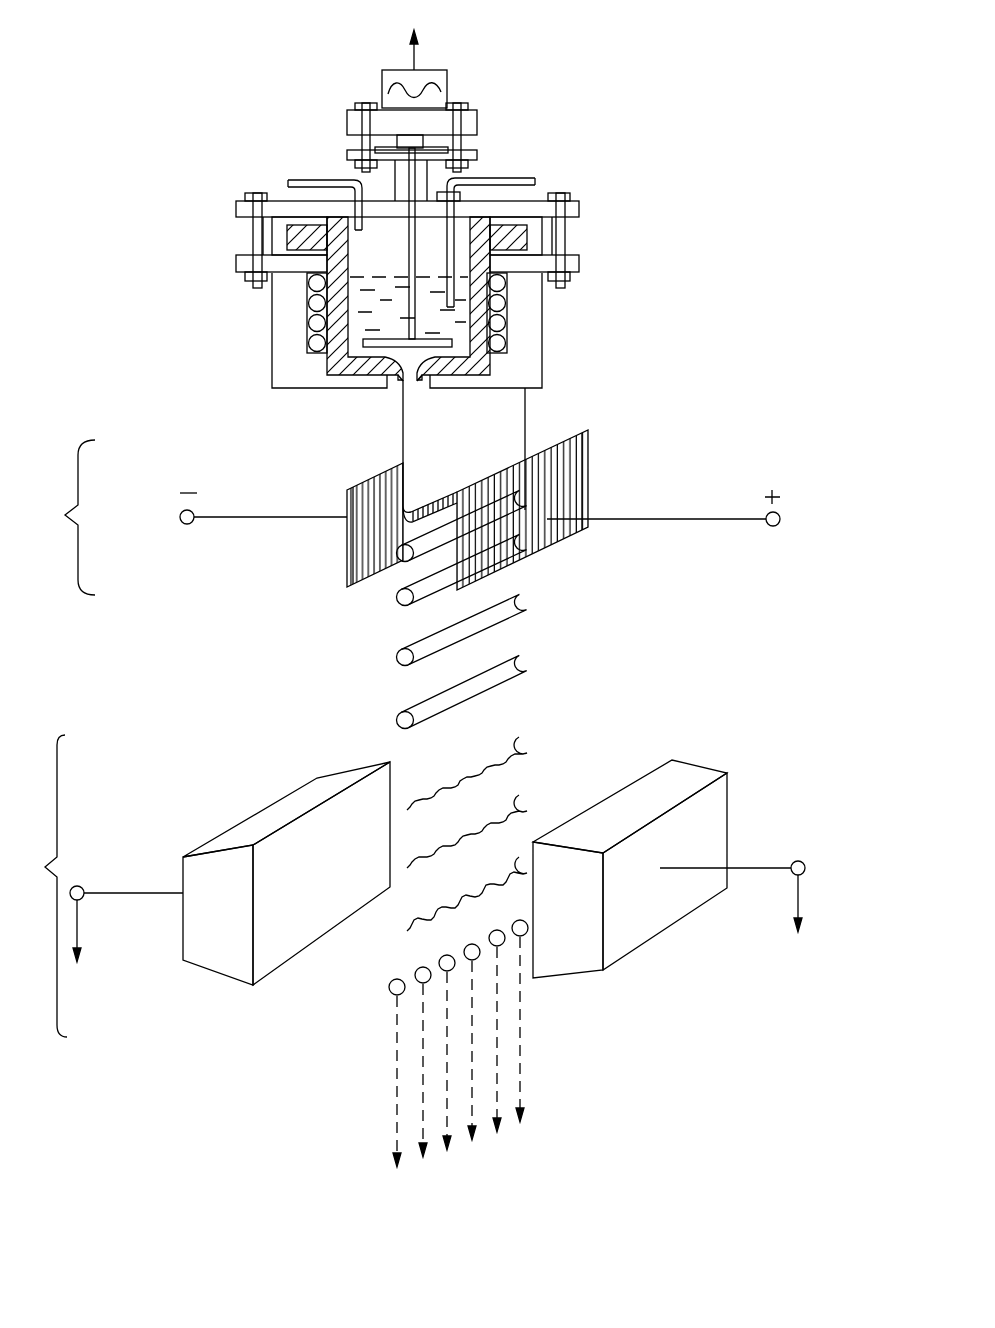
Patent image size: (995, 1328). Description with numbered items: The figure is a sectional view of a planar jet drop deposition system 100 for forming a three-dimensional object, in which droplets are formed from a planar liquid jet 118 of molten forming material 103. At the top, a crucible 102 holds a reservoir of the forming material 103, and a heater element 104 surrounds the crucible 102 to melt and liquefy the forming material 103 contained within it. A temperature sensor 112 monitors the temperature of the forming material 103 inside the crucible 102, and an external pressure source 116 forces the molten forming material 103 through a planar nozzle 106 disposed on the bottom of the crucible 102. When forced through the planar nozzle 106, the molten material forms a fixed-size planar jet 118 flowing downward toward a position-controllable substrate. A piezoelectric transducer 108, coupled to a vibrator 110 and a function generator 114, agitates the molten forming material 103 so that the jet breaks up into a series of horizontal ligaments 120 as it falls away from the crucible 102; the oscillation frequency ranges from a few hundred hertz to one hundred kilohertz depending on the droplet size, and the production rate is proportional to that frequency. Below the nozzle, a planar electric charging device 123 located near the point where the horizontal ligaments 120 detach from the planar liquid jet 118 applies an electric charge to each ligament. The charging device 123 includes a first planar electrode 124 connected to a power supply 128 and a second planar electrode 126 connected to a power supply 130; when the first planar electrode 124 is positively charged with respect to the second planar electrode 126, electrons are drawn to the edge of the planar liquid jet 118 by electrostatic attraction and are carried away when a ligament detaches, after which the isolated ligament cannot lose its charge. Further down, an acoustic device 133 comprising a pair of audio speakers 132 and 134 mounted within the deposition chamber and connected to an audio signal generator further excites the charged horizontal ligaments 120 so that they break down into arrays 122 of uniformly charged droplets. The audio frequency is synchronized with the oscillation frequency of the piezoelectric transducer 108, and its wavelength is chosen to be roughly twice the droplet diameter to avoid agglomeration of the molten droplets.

The planar jet drop deposition system 100 is at (655, 65).
The crucible 102 is at (245, 235).
The forming material 103 is at (455, 328).
The heater element 104 is at (500, 303).
The planar nozzle 106 is at (397, 378).
The piezoelectric transducer 108 is at (397, 142).
The vibrator 110 is at (412, 303).
The temperature sensor 112 is at (535, 180).
The function generator 114 is at (448, 80).
The external pressure source 116 is at (290, 181).
The planar liquid jet 118 is at (415, 447).
The horizontal ligaments 120 is at (397, 655).
The arrays of uniformly charged droplets 122 is at (392, 993).
The planar electric charging device 123 is at (390, 491).
The first planar electrode 124 is at (588, 482).
The second planar electrode 126 is at (347, 548).
The power supply 128 is at (780, 525).
The power supply 130 is at (181, 515).
The audio speaker 132 is at (697, 762).
The acoustic device 133 is at (33, 886).
The audio speaker 134 is at (247, 818).